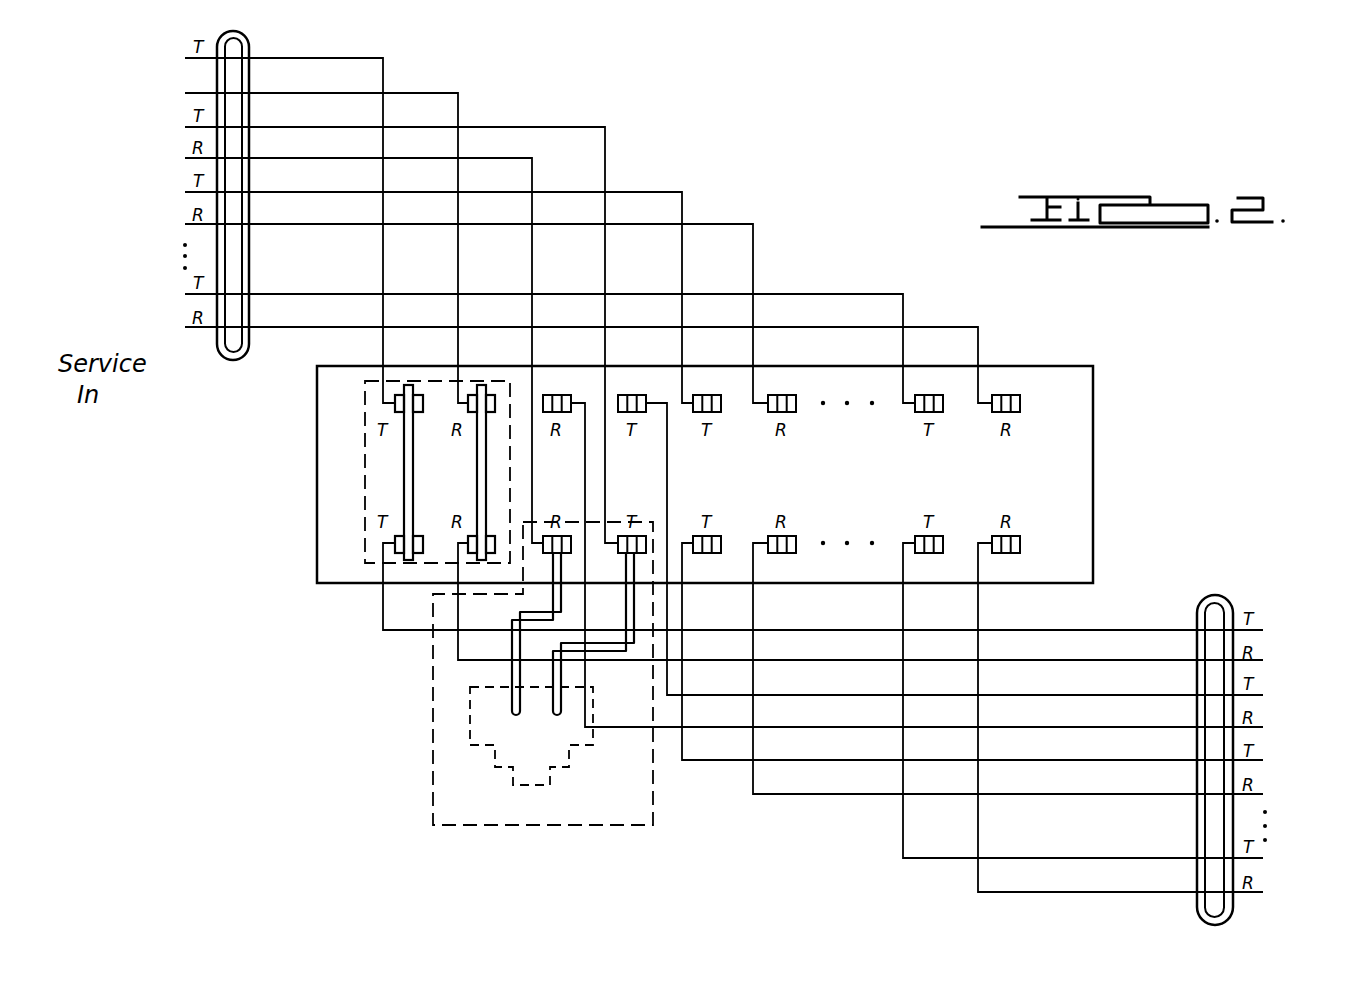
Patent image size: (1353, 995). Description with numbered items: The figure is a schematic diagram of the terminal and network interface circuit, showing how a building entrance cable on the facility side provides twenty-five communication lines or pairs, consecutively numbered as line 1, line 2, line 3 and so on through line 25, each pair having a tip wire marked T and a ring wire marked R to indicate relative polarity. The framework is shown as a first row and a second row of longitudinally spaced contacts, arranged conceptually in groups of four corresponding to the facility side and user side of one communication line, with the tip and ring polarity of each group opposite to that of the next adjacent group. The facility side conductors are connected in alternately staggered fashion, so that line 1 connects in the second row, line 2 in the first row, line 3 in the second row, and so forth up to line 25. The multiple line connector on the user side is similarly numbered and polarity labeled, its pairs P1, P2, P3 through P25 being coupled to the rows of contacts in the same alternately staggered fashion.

The line 1 is at (186, 50).
The line 2 is at (186, 119).
The line 3 is at (186, 184).
The line 25 is at (186, 286).
The patch line pair P1 (tip and ring) P1 is at (1267, 620).
The patch line pair P2 (tip and ring) P2 is at (1267, 686).
The patch line pair P3 (tip and ring) P3 is at (1267, 753).
The patch line pair P25 (tip and ring) P25 is at (1267, 849).